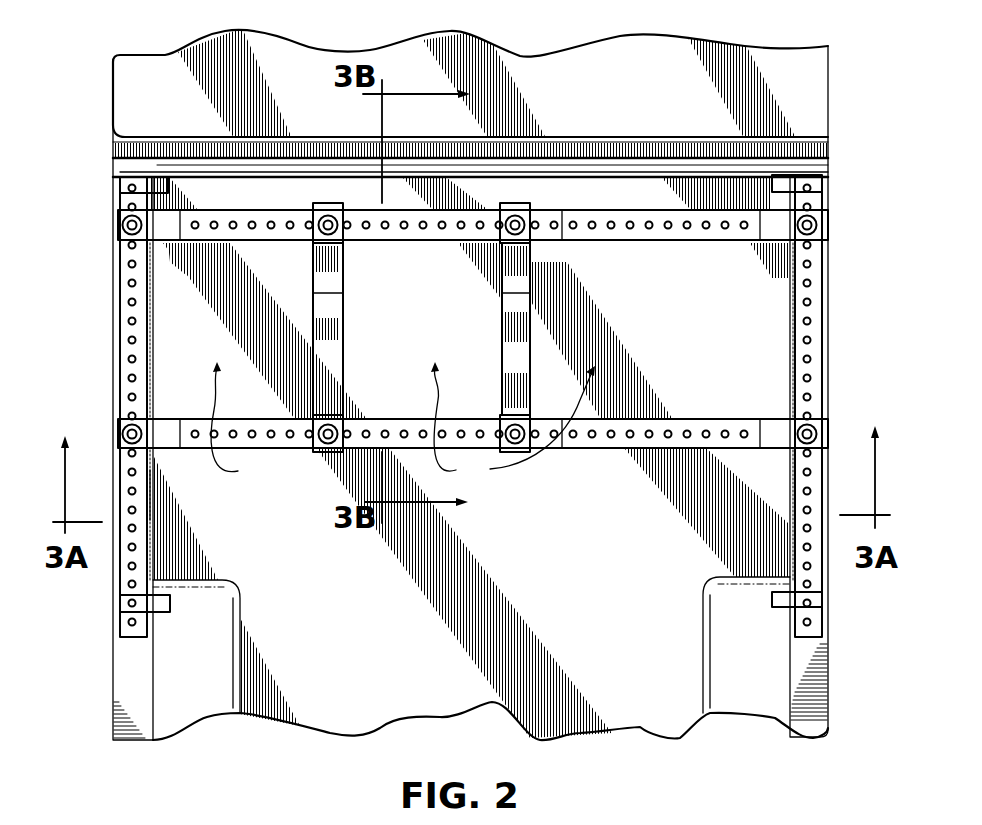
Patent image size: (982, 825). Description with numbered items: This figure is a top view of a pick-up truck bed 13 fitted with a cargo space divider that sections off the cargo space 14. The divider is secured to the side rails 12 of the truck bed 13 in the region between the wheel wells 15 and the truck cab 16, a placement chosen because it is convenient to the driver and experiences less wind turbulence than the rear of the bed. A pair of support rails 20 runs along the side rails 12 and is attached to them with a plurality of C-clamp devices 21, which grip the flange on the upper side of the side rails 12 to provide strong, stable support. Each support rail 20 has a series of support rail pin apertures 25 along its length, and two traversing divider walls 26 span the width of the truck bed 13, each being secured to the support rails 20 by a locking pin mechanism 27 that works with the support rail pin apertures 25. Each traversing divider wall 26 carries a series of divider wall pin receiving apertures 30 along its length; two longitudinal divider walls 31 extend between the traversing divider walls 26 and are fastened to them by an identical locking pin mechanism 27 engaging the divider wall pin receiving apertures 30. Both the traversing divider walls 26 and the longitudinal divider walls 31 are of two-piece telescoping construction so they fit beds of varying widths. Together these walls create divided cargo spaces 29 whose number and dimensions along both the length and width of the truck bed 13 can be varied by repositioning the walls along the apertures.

The side rail 12 is at (116, 700).
The truck bed 13 is at (150, 497).
The cargo space 14 is at (358, 618).
The wheel well 15 is at (204, 674).
The truck cab 16 is at (598, 107).
The support rail 20 is at (123, 272).
The C-clamp device 21 is at (125, 186).
The support rail pin aperture 25 is at (126, 378).
The traversing divider wall 26 is at (638, 242).
The locking pin mechanism 27 is at (120, 226).
The divided cargo space 29 is at (403, 425).
The divider wall pin receiving aperture 30 is at (291, 220).
The longitudinal divider wall 31 is at (316, 294).